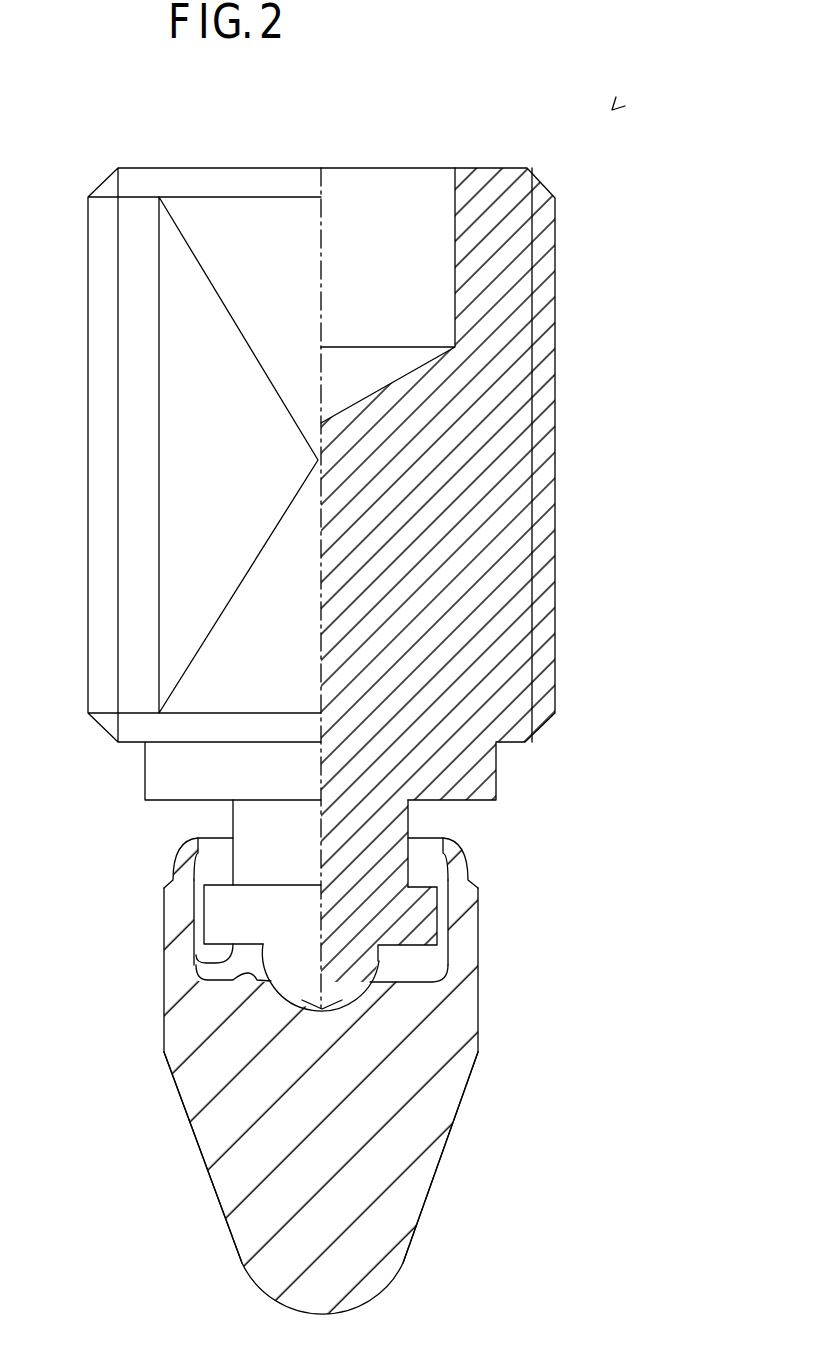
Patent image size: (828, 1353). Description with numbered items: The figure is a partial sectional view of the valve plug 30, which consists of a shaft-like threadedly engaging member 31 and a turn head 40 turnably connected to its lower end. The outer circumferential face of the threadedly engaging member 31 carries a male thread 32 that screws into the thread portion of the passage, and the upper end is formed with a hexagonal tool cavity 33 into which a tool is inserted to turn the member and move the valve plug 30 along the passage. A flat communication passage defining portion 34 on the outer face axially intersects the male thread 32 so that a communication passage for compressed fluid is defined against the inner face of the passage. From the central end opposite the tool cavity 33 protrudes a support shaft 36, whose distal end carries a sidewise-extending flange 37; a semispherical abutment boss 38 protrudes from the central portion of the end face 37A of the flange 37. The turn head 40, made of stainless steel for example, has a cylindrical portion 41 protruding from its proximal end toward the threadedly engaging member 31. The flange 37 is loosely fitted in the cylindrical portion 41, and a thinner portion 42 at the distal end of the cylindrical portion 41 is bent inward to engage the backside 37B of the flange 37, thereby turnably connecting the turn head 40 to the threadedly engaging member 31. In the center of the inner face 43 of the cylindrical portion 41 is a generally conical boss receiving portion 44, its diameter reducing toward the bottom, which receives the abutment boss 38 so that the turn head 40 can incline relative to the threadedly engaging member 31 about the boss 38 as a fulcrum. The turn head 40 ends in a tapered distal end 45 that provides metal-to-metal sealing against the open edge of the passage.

The valve plug 30 is at (612, 110).
The threadedly engaging member 31 is at (571, 537).
The male thread 32 is at (543, 374).
The tool cavity 33 is at (455, 223).
The communication passage defining portion 34 is at (233, 243).
The support shaft 36 is at (410, 823).
The flange 37 is at (410, 915).
The end face 37A is at (226, 963).
The backside 37B is at (222, 886).
The abutment boss 38 is at (355, 970).
The turn head 40 is at (497, 1052).
The cylindrical portion 41 is at (170, 928).
The thinner portion 42 is at (183, 853).
The inner face 43 is at (205, 980).
The boss receiving portion 44 is at (297, 997).
The distal end 45 is at (197, 1143).